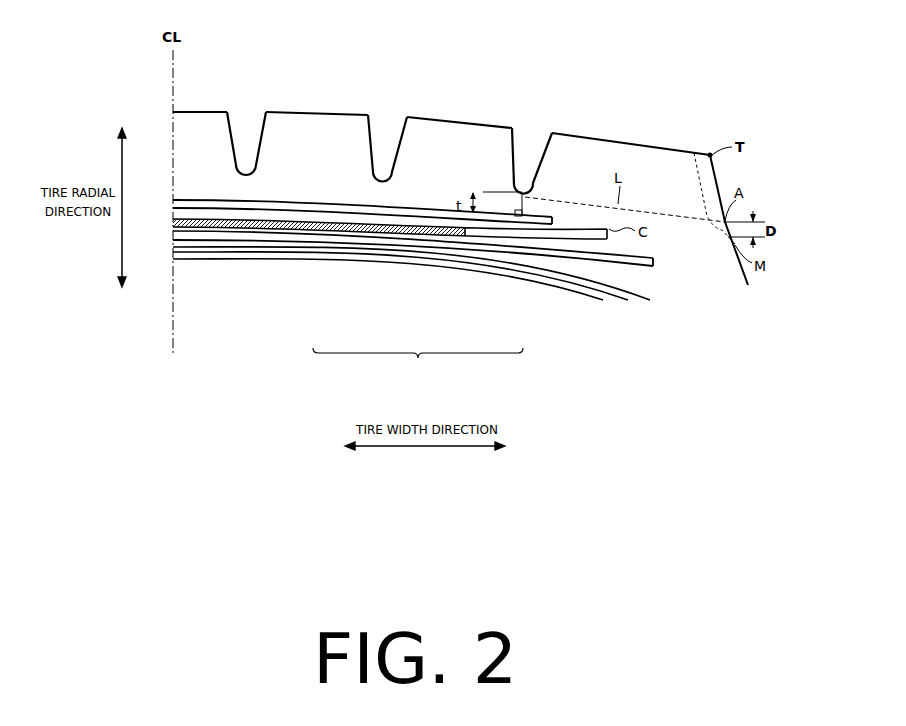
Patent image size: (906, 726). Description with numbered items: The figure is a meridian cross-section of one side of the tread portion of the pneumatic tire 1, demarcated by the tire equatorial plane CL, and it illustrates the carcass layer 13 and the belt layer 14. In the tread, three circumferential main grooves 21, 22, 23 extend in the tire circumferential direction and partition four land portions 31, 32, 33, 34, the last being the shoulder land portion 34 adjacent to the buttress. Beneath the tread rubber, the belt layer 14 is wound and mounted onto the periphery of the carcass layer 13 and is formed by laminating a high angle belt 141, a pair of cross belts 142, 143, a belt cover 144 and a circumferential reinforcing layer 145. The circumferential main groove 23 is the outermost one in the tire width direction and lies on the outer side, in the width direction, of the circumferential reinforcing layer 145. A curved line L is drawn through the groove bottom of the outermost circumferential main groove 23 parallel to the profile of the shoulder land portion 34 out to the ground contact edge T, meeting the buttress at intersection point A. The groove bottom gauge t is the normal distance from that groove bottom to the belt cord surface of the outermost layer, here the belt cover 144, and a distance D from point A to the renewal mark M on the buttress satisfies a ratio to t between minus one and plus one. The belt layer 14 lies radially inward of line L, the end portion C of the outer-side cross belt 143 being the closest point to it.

The pneumatic tire 1 is at (657, 57).
The carcass layer 13 is at (555, 273).
The belt layer 14 is at (418, 366).
The high angle belt 141 is at (512, 258).
The cross belt 142 is at (472, 246).
The cross belt 143 is at (427, 225).
The belt cover 144 is at (388, 211).
The circumferential reinforcing layer 145 is at (348, 232).
The circumferential main groove 21 is at (245, 123).
The circumferential main groove 22 is at (388, 130).
The circumferential main groove 23 is at (530, 140).
The land portion 31 is at (185, 111).
The land portion 32 is at (317, 111).
The land portion 33 is at (460, 123).
The shoulder land portion 34 is at (630, 137).